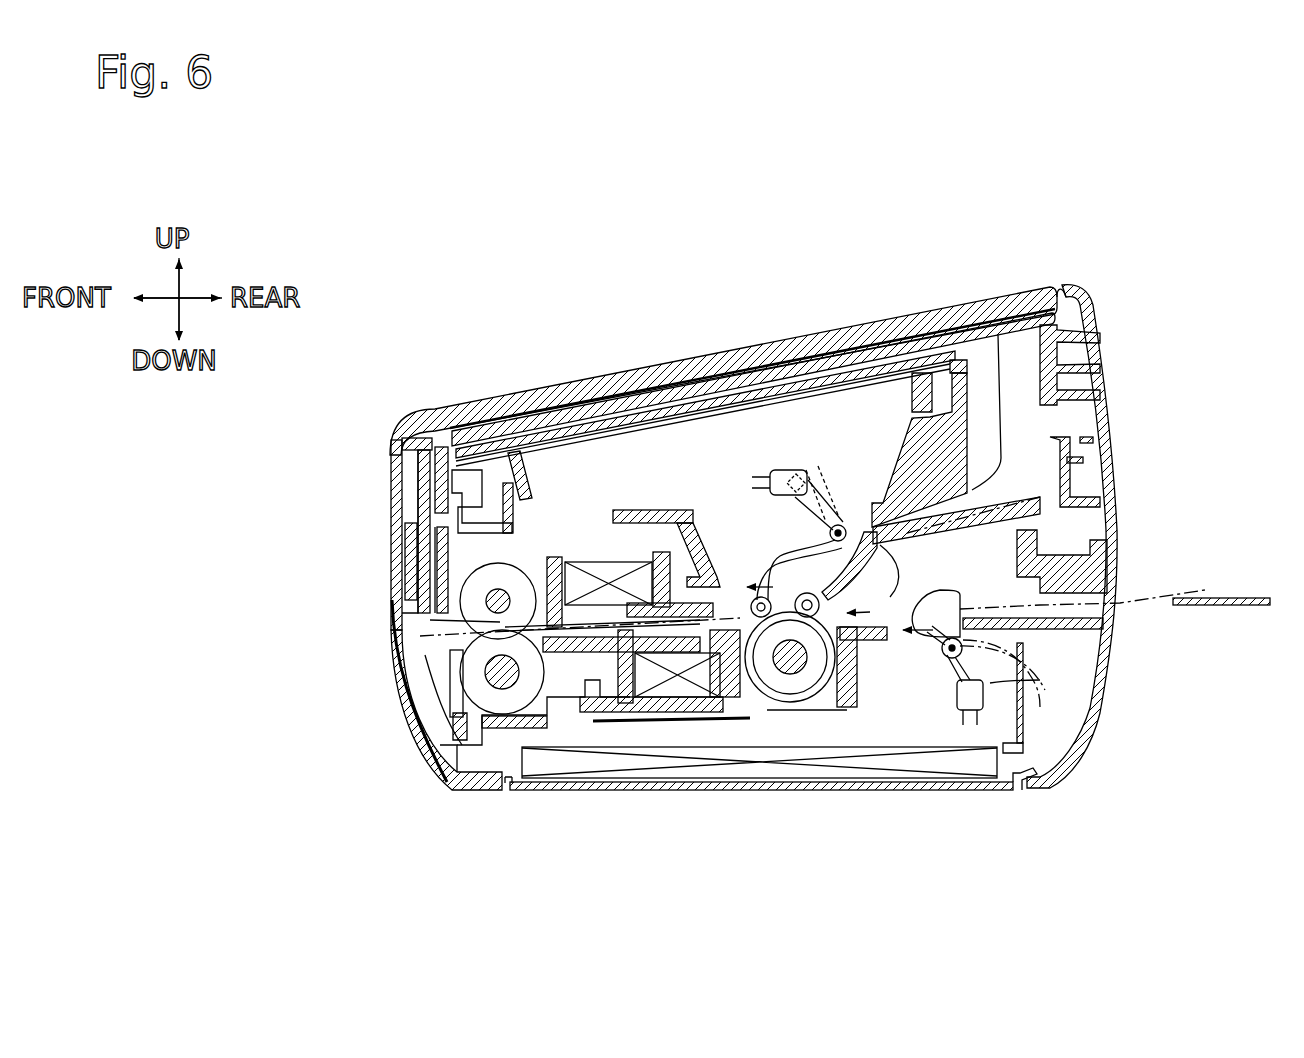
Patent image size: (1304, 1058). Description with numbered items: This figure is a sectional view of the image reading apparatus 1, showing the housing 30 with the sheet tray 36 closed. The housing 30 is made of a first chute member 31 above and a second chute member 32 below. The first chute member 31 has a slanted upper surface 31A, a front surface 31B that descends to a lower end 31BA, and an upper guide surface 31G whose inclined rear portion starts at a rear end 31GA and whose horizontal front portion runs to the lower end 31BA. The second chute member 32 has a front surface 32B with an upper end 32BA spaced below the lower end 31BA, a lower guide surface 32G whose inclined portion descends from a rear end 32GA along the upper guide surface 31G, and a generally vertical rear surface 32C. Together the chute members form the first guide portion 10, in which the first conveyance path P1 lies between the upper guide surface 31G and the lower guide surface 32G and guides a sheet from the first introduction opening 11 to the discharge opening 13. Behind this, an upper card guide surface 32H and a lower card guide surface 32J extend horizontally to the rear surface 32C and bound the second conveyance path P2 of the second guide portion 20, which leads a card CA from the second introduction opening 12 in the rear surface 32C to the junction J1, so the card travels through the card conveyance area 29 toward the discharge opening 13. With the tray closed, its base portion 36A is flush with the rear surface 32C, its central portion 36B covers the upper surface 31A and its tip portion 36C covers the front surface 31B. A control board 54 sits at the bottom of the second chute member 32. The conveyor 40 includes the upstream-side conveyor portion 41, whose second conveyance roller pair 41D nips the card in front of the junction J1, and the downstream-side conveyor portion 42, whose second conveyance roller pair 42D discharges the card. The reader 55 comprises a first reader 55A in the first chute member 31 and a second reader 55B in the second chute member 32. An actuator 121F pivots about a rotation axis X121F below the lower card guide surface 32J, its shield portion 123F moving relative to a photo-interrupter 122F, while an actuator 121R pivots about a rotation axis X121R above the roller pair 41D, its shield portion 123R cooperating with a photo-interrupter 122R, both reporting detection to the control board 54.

The image reading apparatus 1 is at (428, 250).
The first guide portion 10 is at (723, 612).
The first introduction opening 11 is at (1010, 488).
The second introduction opening 12 is at (1125, 610).
The discharge opening 13 is at (428, 630).
The second guide portion 20 is at (1060, 615).
The card conveyance area 29 is at (735, 612).
The housing 30 is at (1108, 726).
The first chute member 31 is at (422, 428).
The upper surface 31A is at (600, 372).
The front surface 31B is at (440, 517).
The lower end 31BA is at (450, 620).
The upper guide surface 31G is at (893, 540).
The rear end 31GA is at (990, 497).
The second chute member 32 is at (448, 729).
The front surface 32B is at (462, 718).
The upper end 32BA is at (480, 640).
The rear surface 32C is at (1108, 686).
The lower guide surface 32G is at (1100, 527).
The rear end 32GA is at (1035, 500).
The upper card guide surface 32H is at (1085, 600).
The lower card guide surface 32J is at (1080, 610).
The sheet tray 36 is at (484, 395).
The base portion 36A is at (1108, 386).
The central portion 36B is at (962, 310).
The tip portion 36C is at (448, 477).
The conveyor 40 is at (508, 702).
The upstream-side conveyor portion 41 is at (795, 690).
The second conveyance roller pair 41D is at (762, 700).
The downstream-side conveyor portion 42 is at (437, 740).
The second conveyance roller pair 42D is at (472, 712).
The control board 54 is at (880, 760).
The reader 55 is at (588, 548).
The first reader 55A is at (620, 580).
The second reader 55B is at (680, 690).
The actuator 121R is at (787, 640).
The actuator 121F is at (943, 590).
The photo-interrupter 122R is at (768, 478).
The photo-interrupter 122F is at (987, 653).
The shield portion 123R is at (812, 465).
The shield portion 123F is at (1060, 748).
The rotation axis X121R is at (836, 525).
The rotation axis X121F is at (932, 657).
The junction J1 is at (800, 700).
The first conveyance path P1 is at (410, 637).
The second conveyance path P2 is at (1043, 600).
The card CA is at (1262, 598).